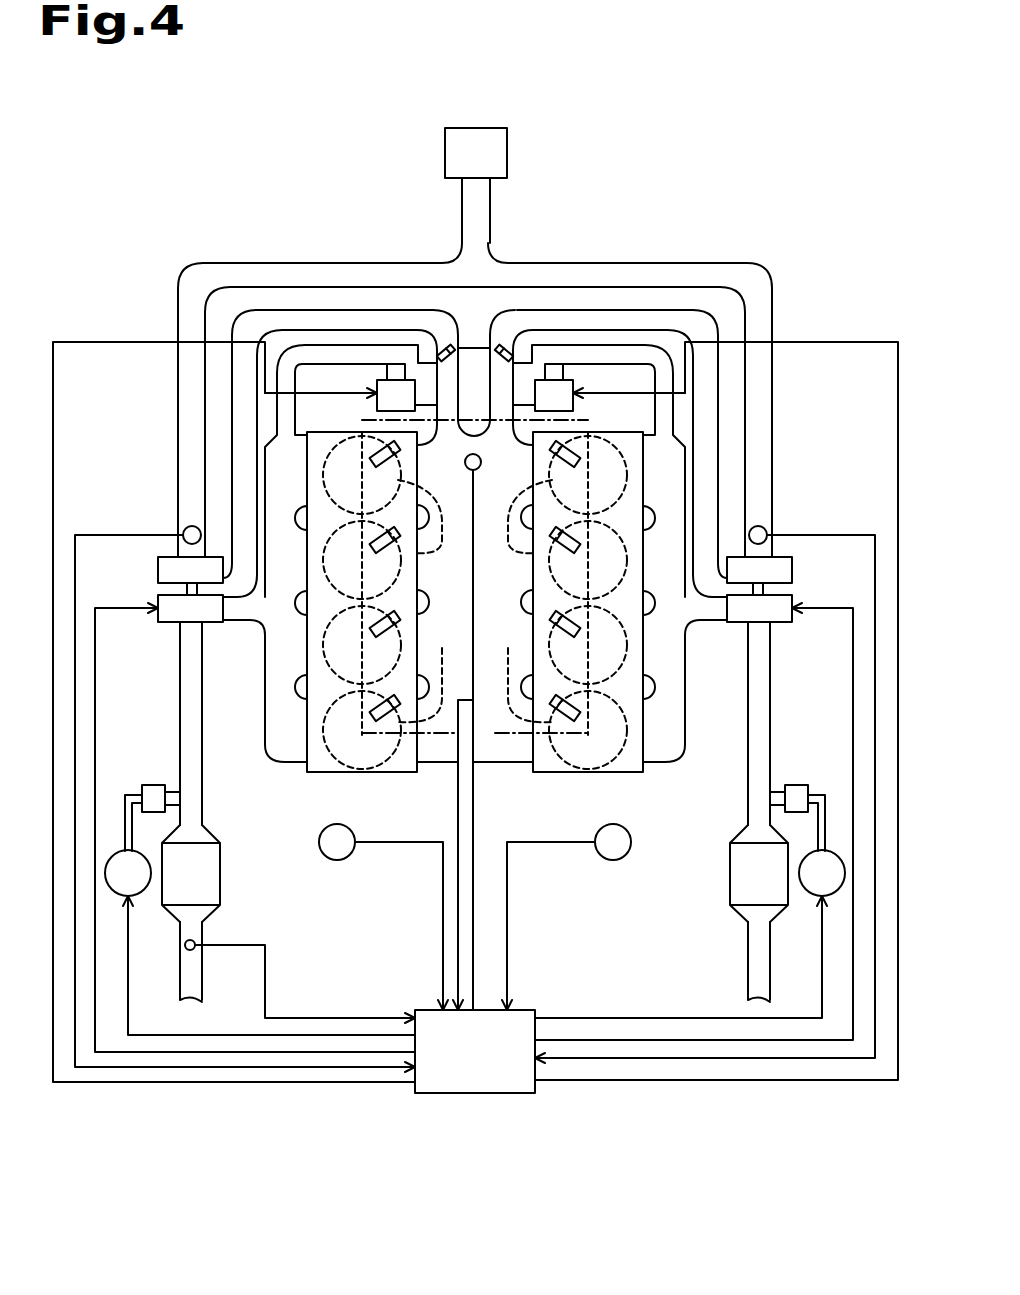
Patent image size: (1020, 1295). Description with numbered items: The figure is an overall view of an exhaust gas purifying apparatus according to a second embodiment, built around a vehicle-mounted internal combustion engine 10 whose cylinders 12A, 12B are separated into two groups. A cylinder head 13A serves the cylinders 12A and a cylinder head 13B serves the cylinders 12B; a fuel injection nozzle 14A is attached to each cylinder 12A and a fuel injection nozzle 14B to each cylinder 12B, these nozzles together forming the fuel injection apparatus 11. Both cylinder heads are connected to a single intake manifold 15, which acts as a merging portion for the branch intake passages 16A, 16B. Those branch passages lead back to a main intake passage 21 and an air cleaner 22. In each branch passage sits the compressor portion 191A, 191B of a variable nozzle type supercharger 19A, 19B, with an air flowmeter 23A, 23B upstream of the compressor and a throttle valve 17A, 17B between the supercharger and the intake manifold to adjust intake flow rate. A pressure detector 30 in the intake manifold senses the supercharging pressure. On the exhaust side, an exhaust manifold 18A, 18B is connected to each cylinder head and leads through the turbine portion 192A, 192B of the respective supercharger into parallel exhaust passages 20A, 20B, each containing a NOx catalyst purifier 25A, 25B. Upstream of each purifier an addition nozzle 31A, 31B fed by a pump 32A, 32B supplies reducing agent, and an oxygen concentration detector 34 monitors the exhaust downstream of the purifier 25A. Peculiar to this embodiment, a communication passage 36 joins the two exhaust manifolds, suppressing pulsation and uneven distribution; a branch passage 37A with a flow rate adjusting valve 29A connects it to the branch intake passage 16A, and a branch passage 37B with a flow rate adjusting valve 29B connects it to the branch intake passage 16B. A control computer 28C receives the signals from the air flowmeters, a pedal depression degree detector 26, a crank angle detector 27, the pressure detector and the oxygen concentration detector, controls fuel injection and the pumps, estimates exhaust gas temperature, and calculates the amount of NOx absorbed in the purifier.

The internal combustion engine 10 is at (199, 206).
The fuel injection apparatus 11 is at (433, 765).
The cylinders 12A is at (394, 602).
The cylinders 12B is at (557, 602).
The cylinder head 13A is at (330, 773).
The cylinder head 13B is at (620, 773).
The fuel injection nozzle 14A is at (368, 545).
The fuel injection nozzle 14B is at (582, 545).
The intake manifold 15 is at (500, 755).
The branch intake passage 16A is at (325, 320).
The branch intake passage 16B is at (625, 320).
The throttle valve 17A is at (441, 346).
The throttle valve 17B is at (509, 346).
The exhaust manifold 18A is at (276, 737).
The exhaust manifold 18B is at (671, 737).
The supercharger 19A is at (238, 742).
The supercharger 19B is at (711, 736).
The compressor portion 191A is at (168, 566).
The compressor portion 191B is at (782, 566).
The turbine portion 192A is at (163, 612).
The turbine portion 192B is at (787, 612).
The exhaust passage 20A is at (203, 783).
The exhaust passage 20B is at (747, 783).
The main intake passage 21 is at (490, 203).
The air cleaner 22 is at (507, 150).
The air flowmeter 23A is at (192, 526).
The air flowmeter 23B is at (758, 526).
The purifier 25A is at (220, 877).
The purifier 25B is at (730, 877).
The pedal depression degree detector 26 is at (345, 856).
The crank angle detector 27 is at (608, 856).
The control computer 28C is at (474, 1093).
The flow rate adjusting valve 29A is at (418, 360).
The flow rate adjusting valve 29B is at (532, 360).
The pressure detector 30 is at (480, 467).
The addition nozzle 31A is at (152, 785).
The addition nozzle 31B is at (798, 785).
The pump 32A is at (118, 852).
The pump 32B is at (832, 852).
The oxygen concentration detector 34 is at (184, 948).
The communication passage 36 is at (478, 348).
The branch passage 37A is at (377, 382).
The branch passage 37B is at (573, 382).